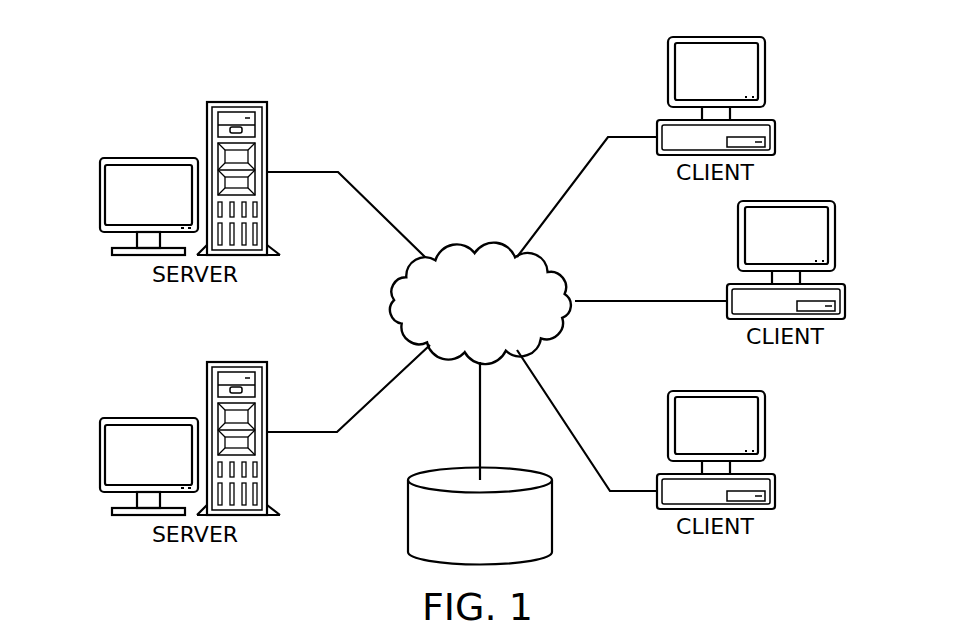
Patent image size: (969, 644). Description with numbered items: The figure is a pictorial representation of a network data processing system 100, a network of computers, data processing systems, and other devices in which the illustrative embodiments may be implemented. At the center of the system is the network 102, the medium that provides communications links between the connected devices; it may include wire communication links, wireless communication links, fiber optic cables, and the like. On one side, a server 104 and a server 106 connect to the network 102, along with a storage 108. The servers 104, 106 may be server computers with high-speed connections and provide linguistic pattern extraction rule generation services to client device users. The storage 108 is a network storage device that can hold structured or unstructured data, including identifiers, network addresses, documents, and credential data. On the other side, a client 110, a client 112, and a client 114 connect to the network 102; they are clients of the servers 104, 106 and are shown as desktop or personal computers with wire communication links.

The network data processing system 100 is at (340, 80).
The network 102 is at (455, 250).
The server 104 is at (100, 195).
The server 106 is at (100, 455).
The storage 108 is at (408, 512).
The client 110 is at (777, 127).
The client 112 is at (847, 312).
The client 114 is at (777, 503).